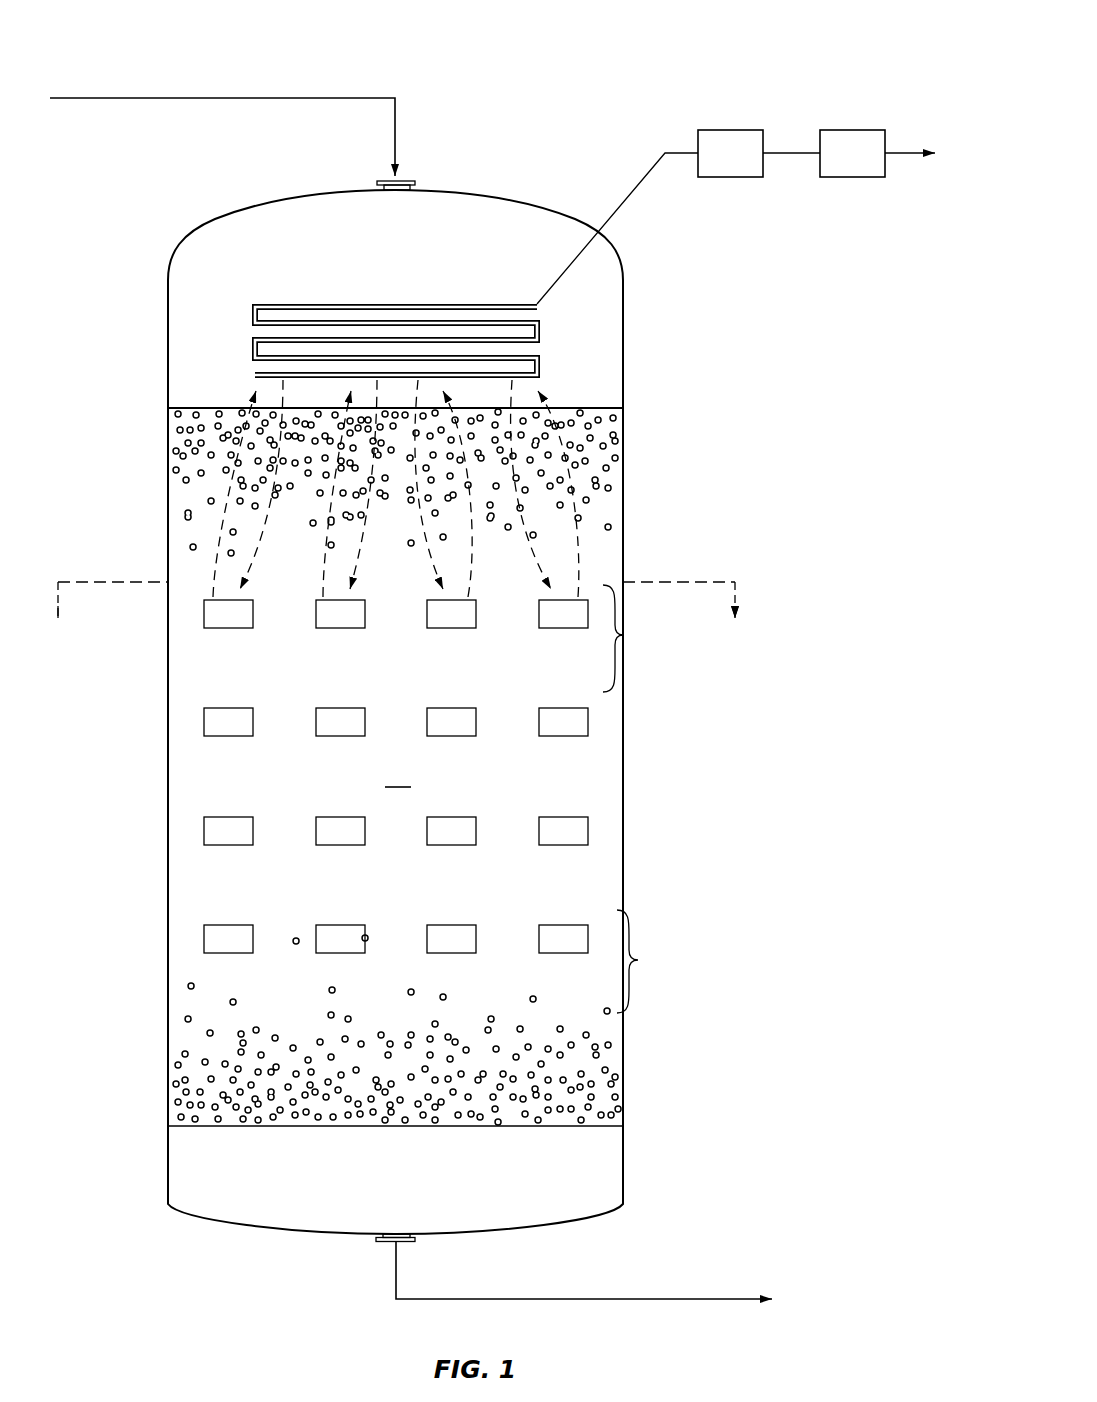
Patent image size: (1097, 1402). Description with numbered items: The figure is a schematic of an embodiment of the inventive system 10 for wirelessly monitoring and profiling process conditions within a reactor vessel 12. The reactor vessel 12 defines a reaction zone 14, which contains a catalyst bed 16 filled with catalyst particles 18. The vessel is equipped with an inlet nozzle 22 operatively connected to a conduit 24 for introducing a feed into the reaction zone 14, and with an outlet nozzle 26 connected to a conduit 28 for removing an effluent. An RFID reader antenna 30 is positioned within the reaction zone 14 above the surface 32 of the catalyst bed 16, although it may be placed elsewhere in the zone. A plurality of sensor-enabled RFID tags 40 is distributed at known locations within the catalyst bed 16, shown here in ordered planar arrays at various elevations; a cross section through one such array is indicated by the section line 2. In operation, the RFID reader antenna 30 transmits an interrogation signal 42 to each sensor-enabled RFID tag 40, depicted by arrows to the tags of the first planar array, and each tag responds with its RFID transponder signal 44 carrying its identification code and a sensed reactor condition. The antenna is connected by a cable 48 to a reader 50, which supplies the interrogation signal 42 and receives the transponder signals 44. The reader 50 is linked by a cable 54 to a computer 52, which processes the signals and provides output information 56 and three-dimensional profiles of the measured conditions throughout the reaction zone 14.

The inventive system 10 is at (722, 50).
The reactor vessel 12 is at (626, 490).
The reaction zone 14 is at (204, 387).
The catalyst bed 16 is at (398, 773).
The catalyst particles 18 is at (623, 635).
The inlet nozzle 22 is at (377, 183).
The conduit 24 is at (127, 98).
The outlet nozzle 26 is at (376, 1238).
The conduit 28 is at (627, 1296).
The RFID reader antenna 30 is at (268, 304).
The surface of catalyst bed 32 is at (612, 408).
The sensor-enabled RFID tags 40 is at (228, 629).
The interrogation signal 42 is at (257, 562).
The RFID transponder signals 44 is at (213, 540).
The conduit 48 is at (655, 165).
The reader 50 is at (730, 130).
The computer 52 is at (853, 130).
The cable 54 is at (790, 153).
The output information 56 is at (902, 153).
The section line 2- 2 is at (396, 619).